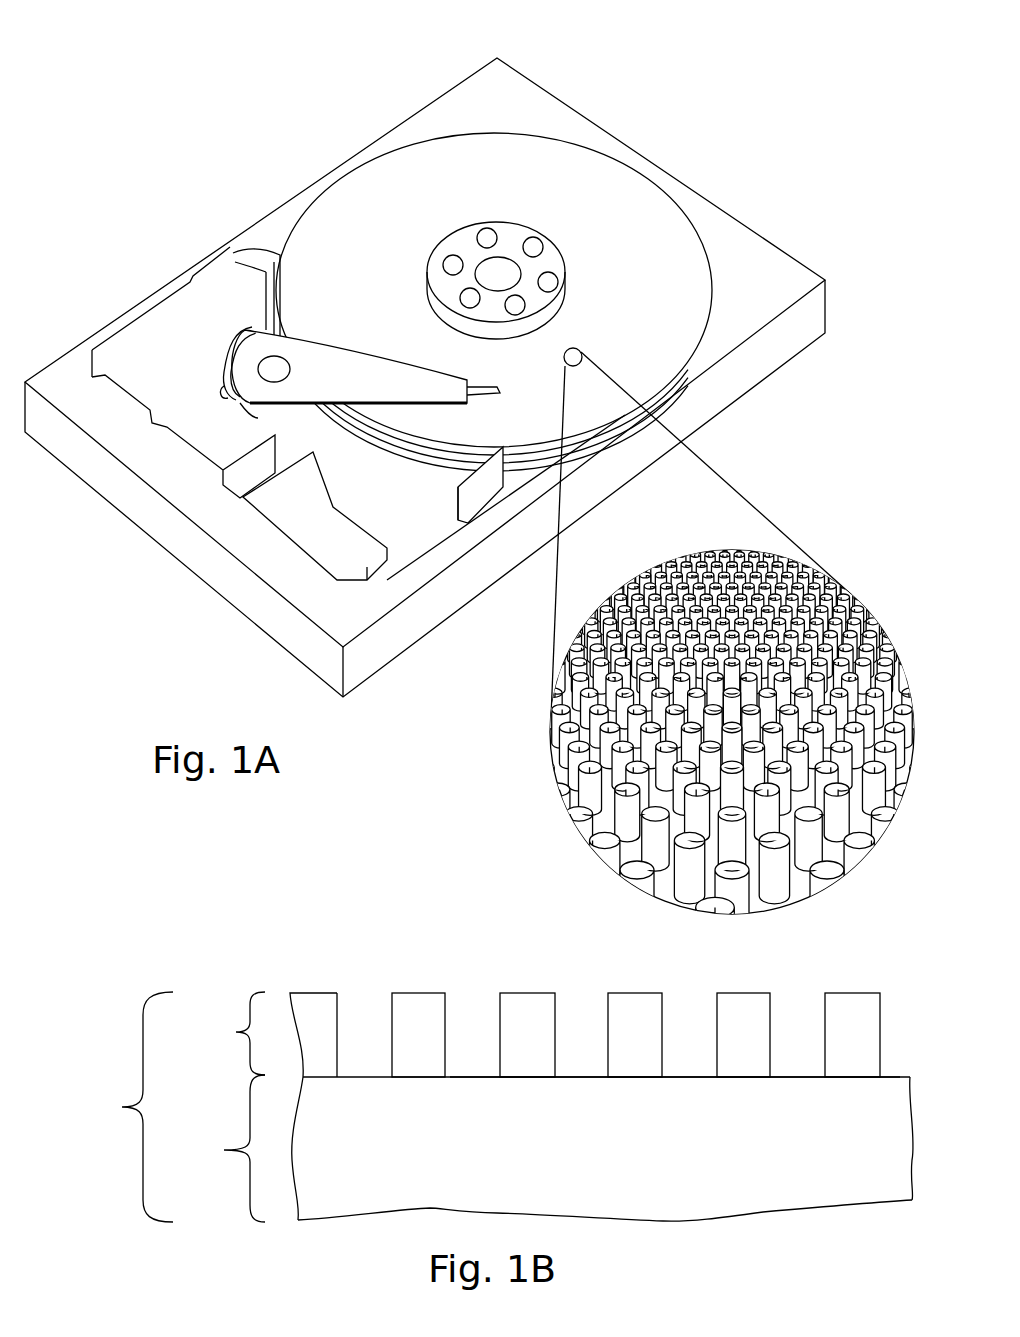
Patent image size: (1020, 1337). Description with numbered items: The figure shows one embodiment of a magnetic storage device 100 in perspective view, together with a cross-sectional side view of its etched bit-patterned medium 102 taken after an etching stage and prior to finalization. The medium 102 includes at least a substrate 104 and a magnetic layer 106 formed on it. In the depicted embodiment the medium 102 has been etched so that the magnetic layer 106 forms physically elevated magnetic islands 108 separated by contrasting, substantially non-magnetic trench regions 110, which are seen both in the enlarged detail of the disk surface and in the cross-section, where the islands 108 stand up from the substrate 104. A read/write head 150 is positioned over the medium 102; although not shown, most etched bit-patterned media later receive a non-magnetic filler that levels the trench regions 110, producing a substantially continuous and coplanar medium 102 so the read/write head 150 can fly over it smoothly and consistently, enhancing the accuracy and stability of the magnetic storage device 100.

In FIG. 1A, the magnetic storage device 100 is at (122, 110).
In FIG. 1A, the medium 102 is at (608, 203).
In FIG. 1B, the medium 102 is at (113, 1107).
In FIG. 1B, the substrate 104 is at (546, 1148).
In FIG. 1B, the magnetic layer 106 is at (227, 1033).
In FIG. 1A, the magnetic islands 108 is at (637, 862).
In FIG. 1B, the magnetic islands 108 is at (536, 1023).
In FIG. 1A, the trench regions 110 is at (788, 855).
In FIG. 1B, the trench regions 110 is at (807, 1078).
In FIG. 1A, the read/write head 150 is at (393, 385).